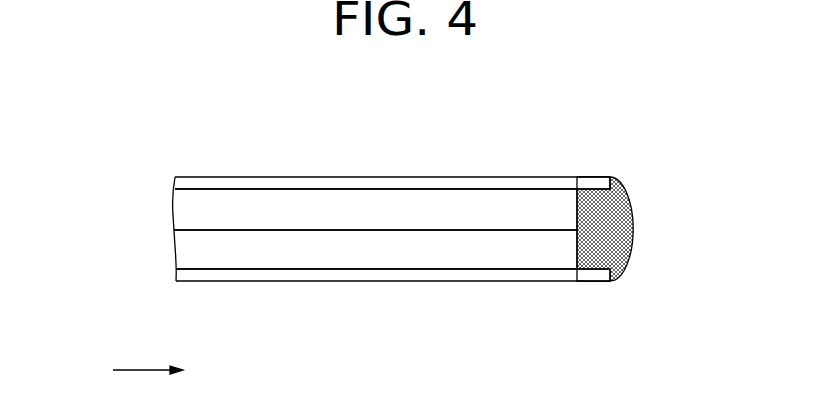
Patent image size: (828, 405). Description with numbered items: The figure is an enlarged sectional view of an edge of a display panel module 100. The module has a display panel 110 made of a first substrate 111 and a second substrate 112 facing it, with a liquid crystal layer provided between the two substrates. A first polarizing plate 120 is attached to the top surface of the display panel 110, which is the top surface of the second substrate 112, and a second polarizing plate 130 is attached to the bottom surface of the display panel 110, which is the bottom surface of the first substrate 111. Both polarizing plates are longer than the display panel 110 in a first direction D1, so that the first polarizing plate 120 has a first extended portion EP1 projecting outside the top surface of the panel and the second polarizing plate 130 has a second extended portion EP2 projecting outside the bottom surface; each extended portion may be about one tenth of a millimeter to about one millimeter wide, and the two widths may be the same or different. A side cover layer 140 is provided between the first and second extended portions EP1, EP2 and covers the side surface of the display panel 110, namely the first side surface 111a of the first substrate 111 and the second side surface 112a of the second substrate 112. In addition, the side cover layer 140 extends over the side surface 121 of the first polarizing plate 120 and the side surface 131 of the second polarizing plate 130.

The display panel module 100 is at (622, 113).
The display panel 110 is at (88, 195).
The first substrate 111 is at (188, 250).
The second substrate 112 is at (183, 207).
The first side surface 111a is at (577, 250).
The second side surface 112a is at (577, 213).
The first polarizing plate 120 is at (392, 186).
The side surface of the first polarizing plate 121 is at (622, 181).
The second polarizing plate 130 is at (392, 271).
The side surface of the second polarizing plate 131 is at (620, 275).
The side cover layer 140 is at (622, 230).
The first extended portion EP1 is at (610, 175).
The second extended portion EP2 is at (610, 283).
The first direction D1 is at (160, 372).